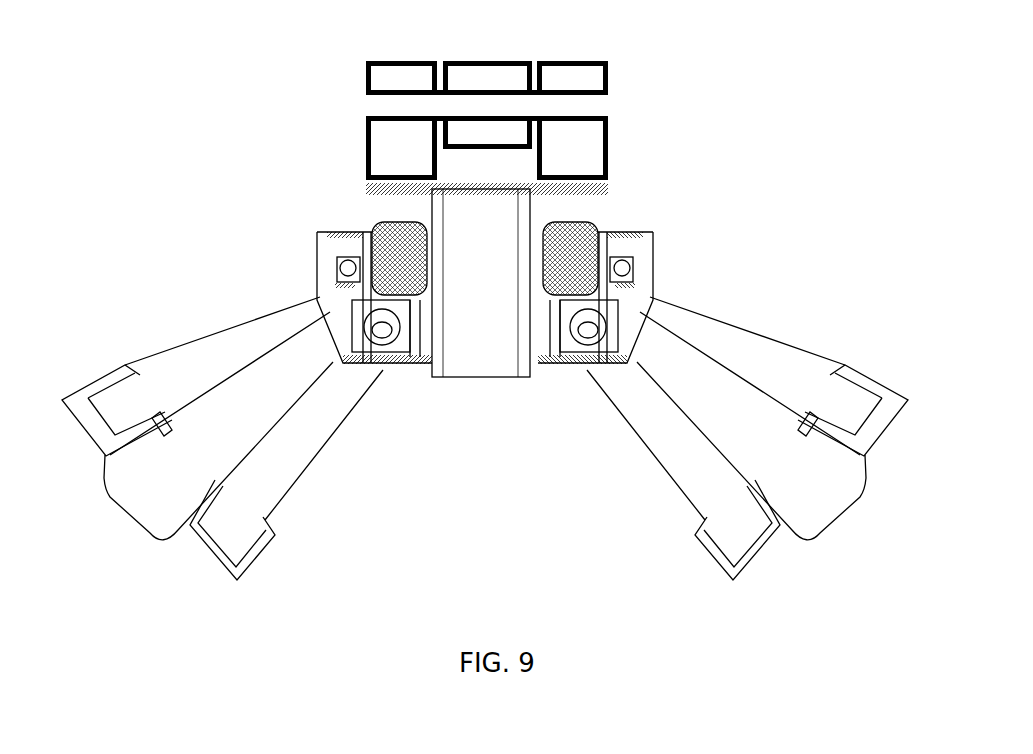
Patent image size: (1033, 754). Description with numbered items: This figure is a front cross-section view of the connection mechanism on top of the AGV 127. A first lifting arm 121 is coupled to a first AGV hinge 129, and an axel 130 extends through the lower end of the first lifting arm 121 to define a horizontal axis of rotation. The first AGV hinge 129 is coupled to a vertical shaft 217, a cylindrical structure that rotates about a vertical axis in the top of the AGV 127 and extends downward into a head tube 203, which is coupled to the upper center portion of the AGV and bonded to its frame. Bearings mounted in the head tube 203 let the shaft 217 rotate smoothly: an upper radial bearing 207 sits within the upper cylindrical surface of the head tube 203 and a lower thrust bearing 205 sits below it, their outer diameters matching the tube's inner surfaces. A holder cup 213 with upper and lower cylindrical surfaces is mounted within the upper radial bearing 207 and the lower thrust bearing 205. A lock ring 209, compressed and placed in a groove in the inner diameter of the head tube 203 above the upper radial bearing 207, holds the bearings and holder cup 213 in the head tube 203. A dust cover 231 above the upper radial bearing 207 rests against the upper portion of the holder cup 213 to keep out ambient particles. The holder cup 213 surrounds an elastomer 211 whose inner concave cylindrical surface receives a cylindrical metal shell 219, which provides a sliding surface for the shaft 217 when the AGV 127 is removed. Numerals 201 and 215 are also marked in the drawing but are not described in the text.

The first lifting arm 121 is at (487, 72).
The first AGV hinge 129 is at (383, 68).
The axel 130 is at (375, 107).
The AGV 127 is at (130, 297).
The right arm 201 is at (683, 308).
The head tube 203 is at (670, 277).
The lower thrust bearing 205 is at (688, 386).
The upper radial bearing 207 is at (328, 268).
The lock ring 209 is at (657, 233).
The elastomer 211 is at (320, 234).
The holder cup 213 is at (330, 312).
The right spring element 215 is at (583, 212).
The shaft 217 is at (530, 372).
The cylindrical metal shell 219 is at (430, 337).
The dust cover 231 is at (372, 237).